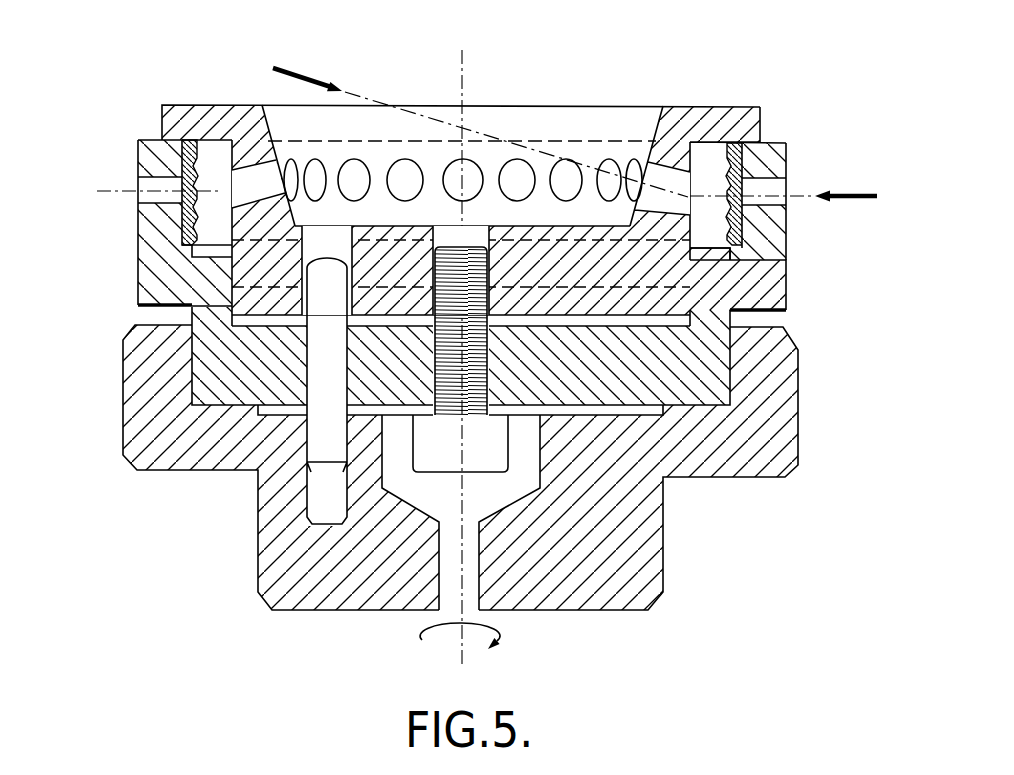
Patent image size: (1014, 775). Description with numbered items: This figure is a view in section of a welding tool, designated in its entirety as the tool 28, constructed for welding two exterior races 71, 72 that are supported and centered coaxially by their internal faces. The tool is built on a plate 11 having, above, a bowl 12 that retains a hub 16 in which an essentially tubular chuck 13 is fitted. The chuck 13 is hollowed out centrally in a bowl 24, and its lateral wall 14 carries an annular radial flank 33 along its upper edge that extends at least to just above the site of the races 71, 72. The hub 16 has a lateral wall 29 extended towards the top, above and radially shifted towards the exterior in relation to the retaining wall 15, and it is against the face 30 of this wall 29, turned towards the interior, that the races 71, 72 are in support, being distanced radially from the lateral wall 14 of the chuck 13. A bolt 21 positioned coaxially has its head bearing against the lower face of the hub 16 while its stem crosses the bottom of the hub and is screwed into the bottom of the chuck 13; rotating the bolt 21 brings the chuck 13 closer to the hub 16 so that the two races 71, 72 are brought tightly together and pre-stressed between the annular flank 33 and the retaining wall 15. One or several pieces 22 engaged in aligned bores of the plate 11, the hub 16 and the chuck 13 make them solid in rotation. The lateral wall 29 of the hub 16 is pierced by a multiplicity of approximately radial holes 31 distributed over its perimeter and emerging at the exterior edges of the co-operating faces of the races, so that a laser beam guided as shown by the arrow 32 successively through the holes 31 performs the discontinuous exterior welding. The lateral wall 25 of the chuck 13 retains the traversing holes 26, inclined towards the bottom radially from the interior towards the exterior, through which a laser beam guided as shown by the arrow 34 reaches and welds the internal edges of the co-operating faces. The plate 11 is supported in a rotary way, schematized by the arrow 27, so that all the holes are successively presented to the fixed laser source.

The plate 11 is at (225, 461).
The bowl 12 is at (718, 358).
The chuck 13 is at (240, 126).
The lateral wall 14 is at (250, 157).
The first means of axial abutment 15 is at (190, 252).
The hub 16 is at (205, 351).
The bolt 21 is at (442, 374).
The piece 22 is at (325, 433).
The bowl 24 is at (543, 225).
The lateral wall 25 is at (645, 153).
The traversing holes 26 is at (452, 168).
The arrow 27 is at (500, 640).
The tool 28 is at (130, 321).
The lateral wall 29 is at (765, 283).
The face 30 is at (733, 223).
The holes 31 is at (776, 178).
The arrow 32 is at (858, 195).
The annular radial flank 33 is at (730, 116).
The arrow 34 is at (306, 76).
The exterior race 71 is at (188, 228).
The exterior race 72 is at (188, 160).